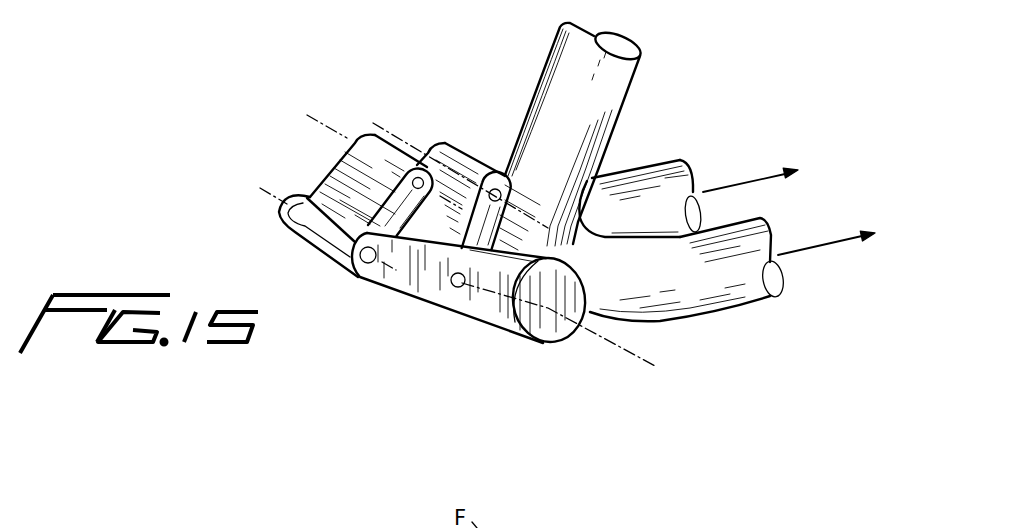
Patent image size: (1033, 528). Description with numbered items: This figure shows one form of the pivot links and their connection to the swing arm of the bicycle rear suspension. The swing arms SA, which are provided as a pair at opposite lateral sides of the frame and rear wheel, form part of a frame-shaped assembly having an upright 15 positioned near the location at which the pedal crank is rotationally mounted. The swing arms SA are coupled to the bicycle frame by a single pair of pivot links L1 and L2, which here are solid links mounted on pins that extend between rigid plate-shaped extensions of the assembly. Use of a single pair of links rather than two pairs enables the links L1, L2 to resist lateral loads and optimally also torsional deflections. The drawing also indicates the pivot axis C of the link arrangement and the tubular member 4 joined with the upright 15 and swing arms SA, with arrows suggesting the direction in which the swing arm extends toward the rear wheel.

The upright 15 is at (562, 60).
The swing arm SA is at (650, 185).
The frame tube 4 is at (754, 309).
The pivot axis C is at (640, 355).
The pivot link L1 is at (352, 177).
The pivot link L2 is at (452, 157).